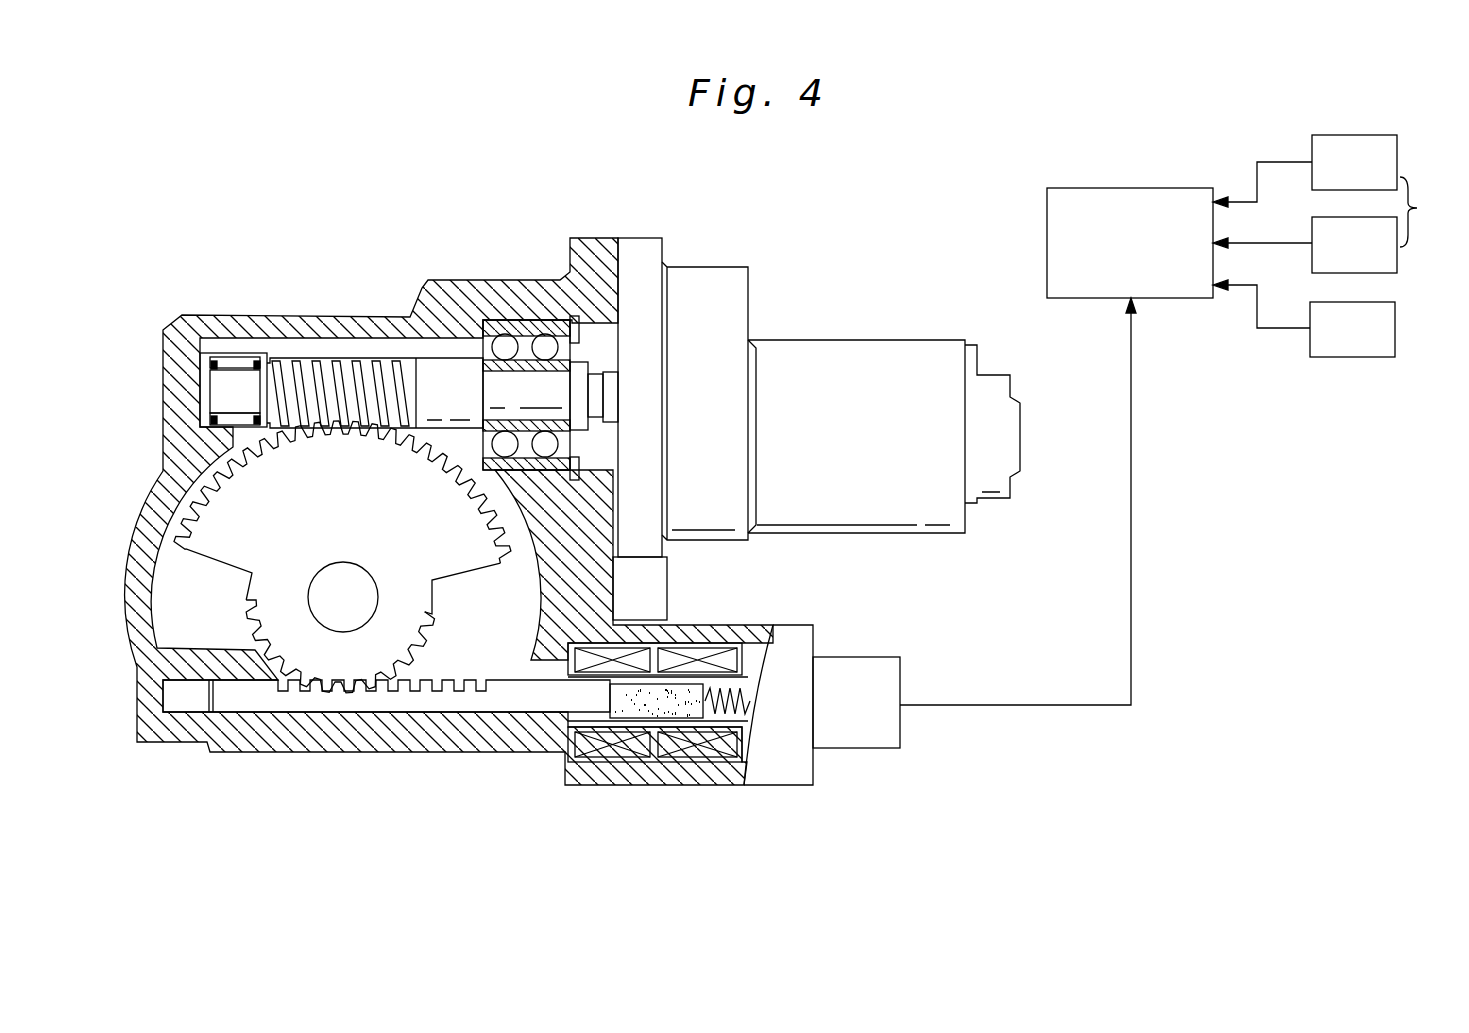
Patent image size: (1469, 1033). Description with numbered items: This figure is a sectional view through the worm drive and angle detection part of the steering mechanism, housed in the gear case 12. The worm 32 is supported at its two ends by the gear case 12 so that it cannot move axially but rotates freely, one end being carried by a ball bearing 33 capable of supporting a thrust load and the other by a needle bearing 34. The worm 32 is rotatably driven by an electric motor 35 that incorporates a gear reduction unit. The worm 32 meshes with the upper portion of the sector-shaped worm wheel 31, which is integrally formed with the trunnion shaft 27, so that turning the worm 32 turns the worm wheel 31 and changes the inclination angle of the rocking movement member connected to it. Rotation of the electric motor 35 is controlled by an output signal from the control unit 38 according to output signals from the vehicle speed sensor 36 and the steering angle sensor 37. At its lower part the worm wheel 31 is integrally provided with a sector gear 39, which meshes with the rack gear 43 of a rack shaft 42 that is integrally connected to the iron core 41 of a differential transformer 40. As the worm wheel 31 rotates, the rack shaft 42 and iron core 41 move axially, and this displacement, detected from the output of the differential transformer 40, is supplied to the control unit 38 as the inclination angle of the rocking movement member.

The gear case 12 is at (443, 285).
The trunnion shaft 27 is at (309, 586).
The worm wheel 31 is at (193, 502).
The worm 32 is at (327, 360).
The ball bearing 33 is at (523, 345).
The needle bearing 34 is at (227, 363).
The electric motor 35 is at (868, 347).
The vehicle speed sensor 36 is at (1384, 204).
The steering angle sensor 37 is at (1397, 333).
The control unit 38 is at (1168, 190).
The sector gear 39 is at (430, 633).
The differential transformer 40 is at (778, 775).
The iron core 41 is at (648, 713).
The rack shaft 42 is at (453, 710).
The rack gear 43 is at (430, 685).